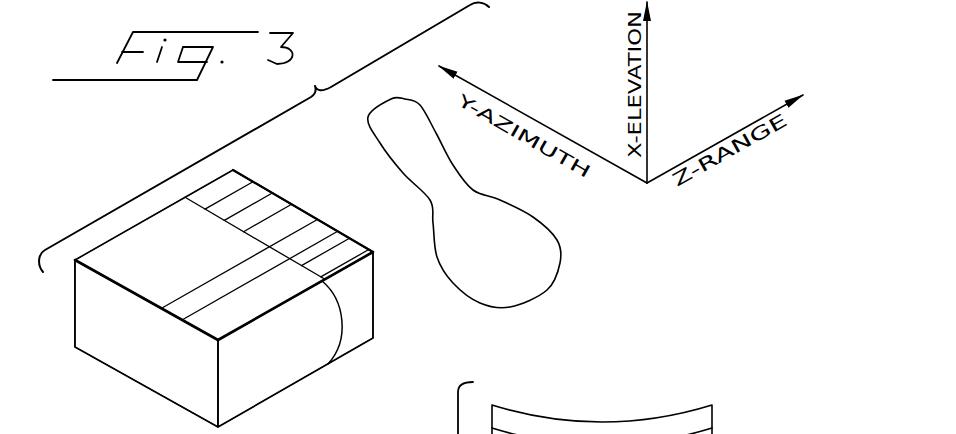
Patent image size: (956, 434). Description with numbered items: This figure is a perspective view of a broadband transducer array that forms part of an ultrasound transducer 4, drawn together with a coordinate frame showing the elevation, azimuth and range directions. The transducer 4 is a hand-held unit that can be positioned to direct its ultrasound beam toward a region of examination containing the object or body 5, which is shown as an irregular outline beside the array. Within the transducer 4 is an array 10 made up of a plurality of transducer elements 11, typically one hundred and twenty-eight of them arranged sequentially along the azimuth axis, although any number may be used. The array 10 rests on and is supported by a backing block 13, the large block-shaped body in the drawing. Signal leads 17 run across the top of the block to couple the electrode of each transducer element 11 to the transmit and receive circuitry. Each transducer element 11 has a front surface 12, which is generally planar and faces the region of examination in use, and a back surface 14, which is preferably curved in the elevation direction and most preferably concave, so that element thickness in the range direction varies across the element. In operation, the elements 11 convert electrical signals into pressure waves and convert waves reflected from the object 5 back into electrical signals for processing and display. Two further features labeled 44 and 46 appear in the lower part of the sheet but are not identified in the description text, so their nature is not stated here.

The transducer 4 is at (113, 387).
The object or body being observed 5 is at (388, 119).
The transducer array 10 is at (240, 159).
The transducer elements 11 is at (263, 178).
The front surface 12 is at (376, 298).
The backing block 13 is at (272, 371).
The back surface 14 is at (312, 350).
The signal leads 17 is at (215, 273).
The lower reflector surface 44 is at (715, 433).
The curved reflector element 46 is at (708, 418).